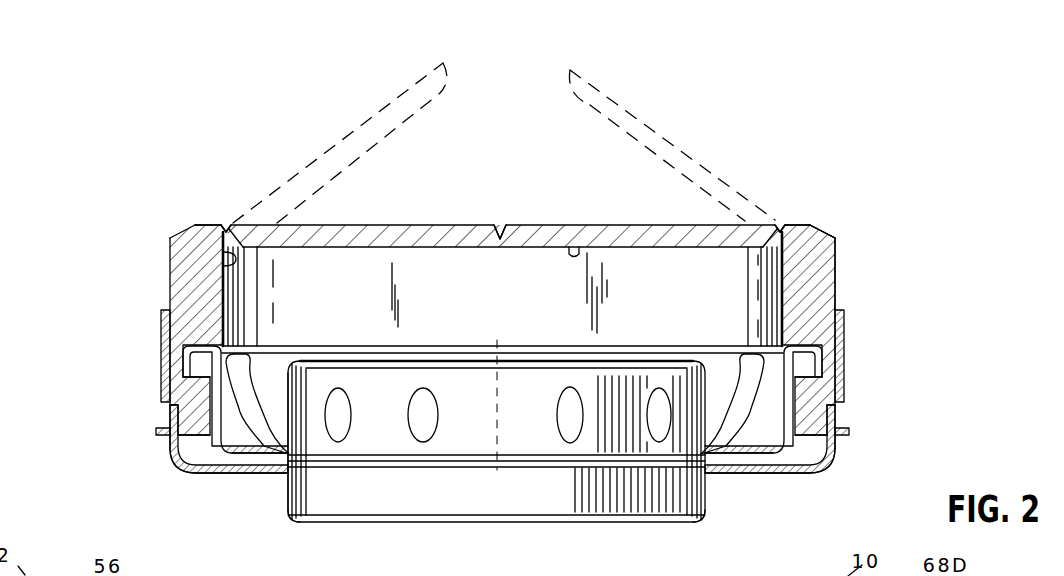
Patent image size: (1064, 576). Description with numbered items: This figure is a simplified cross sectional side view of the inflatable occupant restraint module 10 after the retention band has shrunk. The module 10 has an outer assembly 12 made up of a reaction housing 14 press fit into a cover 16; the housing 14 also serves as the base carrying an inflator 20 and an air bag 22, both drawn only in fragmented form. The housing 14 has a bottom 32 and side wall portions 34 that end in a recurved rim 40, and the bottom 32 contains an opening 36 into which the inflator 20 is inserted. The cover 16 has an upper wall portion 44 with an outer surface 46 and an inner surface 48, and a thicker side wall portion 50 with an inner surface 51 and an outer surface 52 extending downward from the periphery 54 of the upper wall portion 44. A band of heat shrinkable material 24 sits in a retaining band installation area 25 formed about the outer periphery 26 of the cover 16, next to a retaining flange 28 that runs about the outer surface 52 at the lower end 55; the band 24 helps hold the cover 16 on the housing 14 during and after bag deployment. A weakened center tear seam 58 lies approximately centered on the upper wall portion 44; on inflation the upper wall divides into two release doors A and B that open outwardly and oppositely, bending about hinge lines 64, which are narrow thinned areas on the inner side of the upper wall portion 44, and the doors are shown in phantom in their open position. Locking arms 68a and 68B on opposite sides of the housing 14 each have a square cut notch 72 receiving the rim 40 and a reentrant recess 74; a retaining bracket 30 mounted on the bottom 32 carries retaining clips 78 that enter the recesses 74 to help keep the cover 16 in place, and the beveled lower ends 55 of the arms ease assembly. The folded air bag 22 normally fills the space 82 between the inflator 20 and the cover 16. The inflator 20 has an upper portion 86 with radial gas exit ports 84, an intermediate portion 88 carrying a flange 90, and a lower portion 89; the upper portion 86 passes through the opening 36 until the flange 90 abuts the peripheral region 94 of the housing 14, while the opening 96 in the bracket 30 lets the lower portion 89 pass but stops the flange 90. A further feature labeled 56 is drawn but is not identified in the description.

The inflatable occupant restraint module 10 is at (739, 106).
The outer assembly 12 is at (158, 140).
The reaction housing 14 is at (234, 455).
The cover 16 is at (401, 230).
The inflator 20 is at (494, 420).
The air bag 22 is at (272, 420).
The band of heat shrinkable material 24 is at (161, 341).
The retaining band installation area 25 is at (183, 357).
The outer periphery 26 is at (164, 299).
The retaining flange 28 is at (178, 440).
The retaining bracket 30 is at (800, 474).
The bottom 32 is at (743, 476).
The side wall portions 34 is at (221, 478).
The opening 36 is at (701, 505).
The recurved rim 40 is at (190, 369).
The upper wall portion 44 is at (633, 232).
The outer surface 46 is at (520, 233).
The inner surface 48 is at (580, 232).
The side wall portion 50 is at (187, 284).
The inner surface 51 is at (223, 258).
The outer surface 52 is at (170, 238).
The periphery 54 is at (233, 224).
The lower end 55 is at (170, 440).
The top edge 56 is at (190, 224).
The center tear seam 58 is at (497, 228).
The hinge lines 64 is at (224, 226).
The locking arm 68a is at (205, 302).
The locking arm 68B is at (835, 258).
The notch 72 is at (200, 390).
The reentrant recess 74 is at (170, 412).
The retaining clips 78 is at (189, 473).
The space 82 is at (503, 311).
The radial gas exit ports 84 is at (426, 443).
The upper portion 86 is at (515, 443).
The intermediate portion 88 is at (594, 473).
The lower portion 89 is at (634, 500).
The flange 90 is at (367, 466).
The peripheral region 94 is at (340, 446).
The opening 96 is at (292, 519).
The release door A is at (372, 116).
The release door B is at (608, 104).